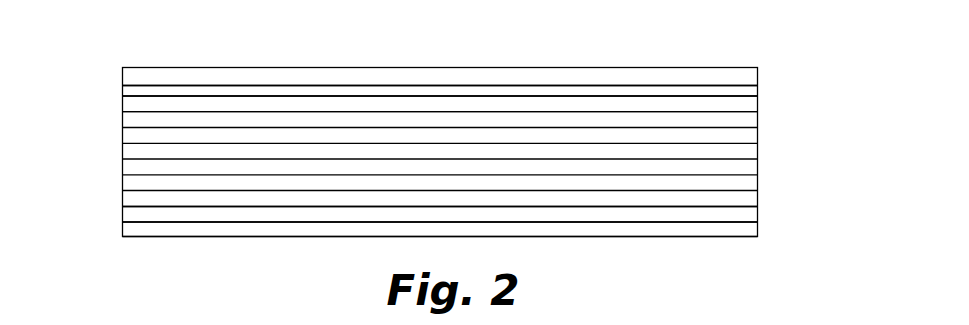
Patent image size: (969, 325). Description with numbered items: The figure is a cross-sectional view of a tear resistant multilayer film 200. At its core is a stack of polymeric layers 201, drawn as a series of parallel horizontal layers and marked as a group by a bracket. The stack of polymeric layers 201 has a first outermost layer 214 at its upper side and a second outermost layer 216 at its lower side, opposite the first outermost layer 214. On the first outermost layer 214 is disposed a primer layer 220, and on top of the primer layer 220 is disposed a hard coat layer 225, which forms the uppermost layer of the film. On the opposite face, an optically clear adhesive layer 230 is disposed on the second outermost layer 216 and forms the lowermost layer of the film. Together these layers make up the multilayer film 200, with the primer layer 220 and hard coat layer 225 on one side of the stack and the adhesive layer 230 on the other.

The multilayer film 200 is at (702, 40).
The stack of polymeric layers 201 is at (115, 99).
The first outermost layer 214 is at (228, 105).
The second outermost layer 216 is at (199, 212).
The primer layer 220 is at (750, 90).
The hard coat layer 225 is at (578, 77).
The optically clear adhesive layer 230 is at (638, 228).